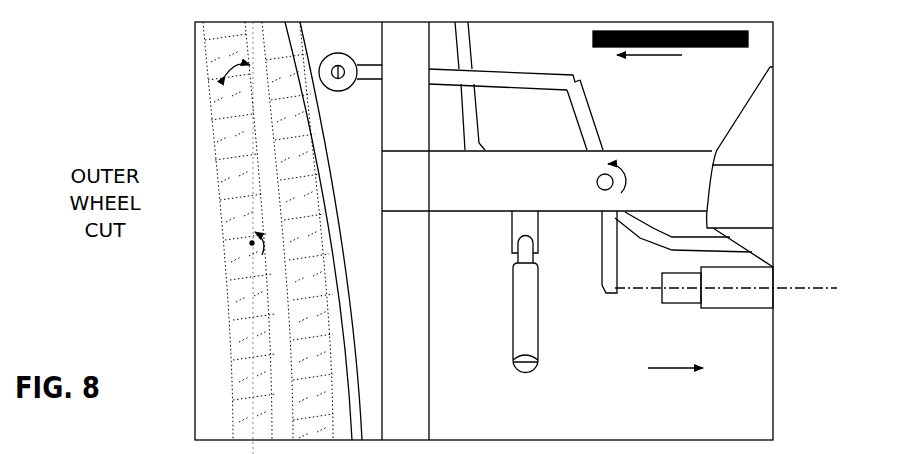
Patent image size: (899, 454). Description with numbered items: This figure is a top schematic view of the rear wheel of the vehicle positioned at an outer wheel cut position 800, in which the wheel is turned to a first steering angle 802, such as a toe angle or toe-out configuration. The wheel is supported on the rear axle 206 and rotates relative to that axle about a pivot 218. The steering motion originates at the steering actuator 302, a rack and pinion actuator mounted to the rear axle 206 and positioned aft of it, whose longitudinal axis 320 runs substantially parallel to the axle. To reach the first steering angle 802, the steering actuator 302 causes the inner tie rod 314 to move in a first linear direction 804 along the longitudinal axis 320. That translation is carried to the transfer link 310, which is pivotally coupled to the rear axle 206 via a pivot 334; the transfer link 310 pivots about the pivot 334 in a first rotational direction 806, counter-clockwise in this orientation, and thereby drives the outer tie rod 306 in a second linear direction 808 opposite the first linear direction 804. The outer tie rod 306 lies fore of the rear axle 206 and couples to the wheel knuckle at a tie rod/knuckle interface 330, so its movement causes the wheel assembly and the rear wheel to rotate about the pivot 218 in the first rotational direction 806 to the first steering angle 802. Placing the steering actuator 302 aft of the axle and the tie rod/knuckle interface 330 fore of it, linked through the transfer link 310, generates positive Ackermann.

The outer wheel cut position 800 is at (145, 110).
The first steering angle 802 is at (221, 75).
The first linear direction 804 is at (662, 370).
The first rotational direction 806 is at (257, 238).
The second linear direction 808 is at (647, 58).
The rear axle 206 is at (470, 205).
The pivot 218 is at (240, 236).
The steering actuator 302 is at (737, 302).
The outer tie rod 306 is at (493, 72).
The transfer link 310 is at (585, 115).
The inner tie rod 314 is at (643, 295).
The longitudinal axis 320 is at (805, 287).
The tie rod/knuckle interface 330 is at (337, 52).
The pivot 334 is at (597, 177).